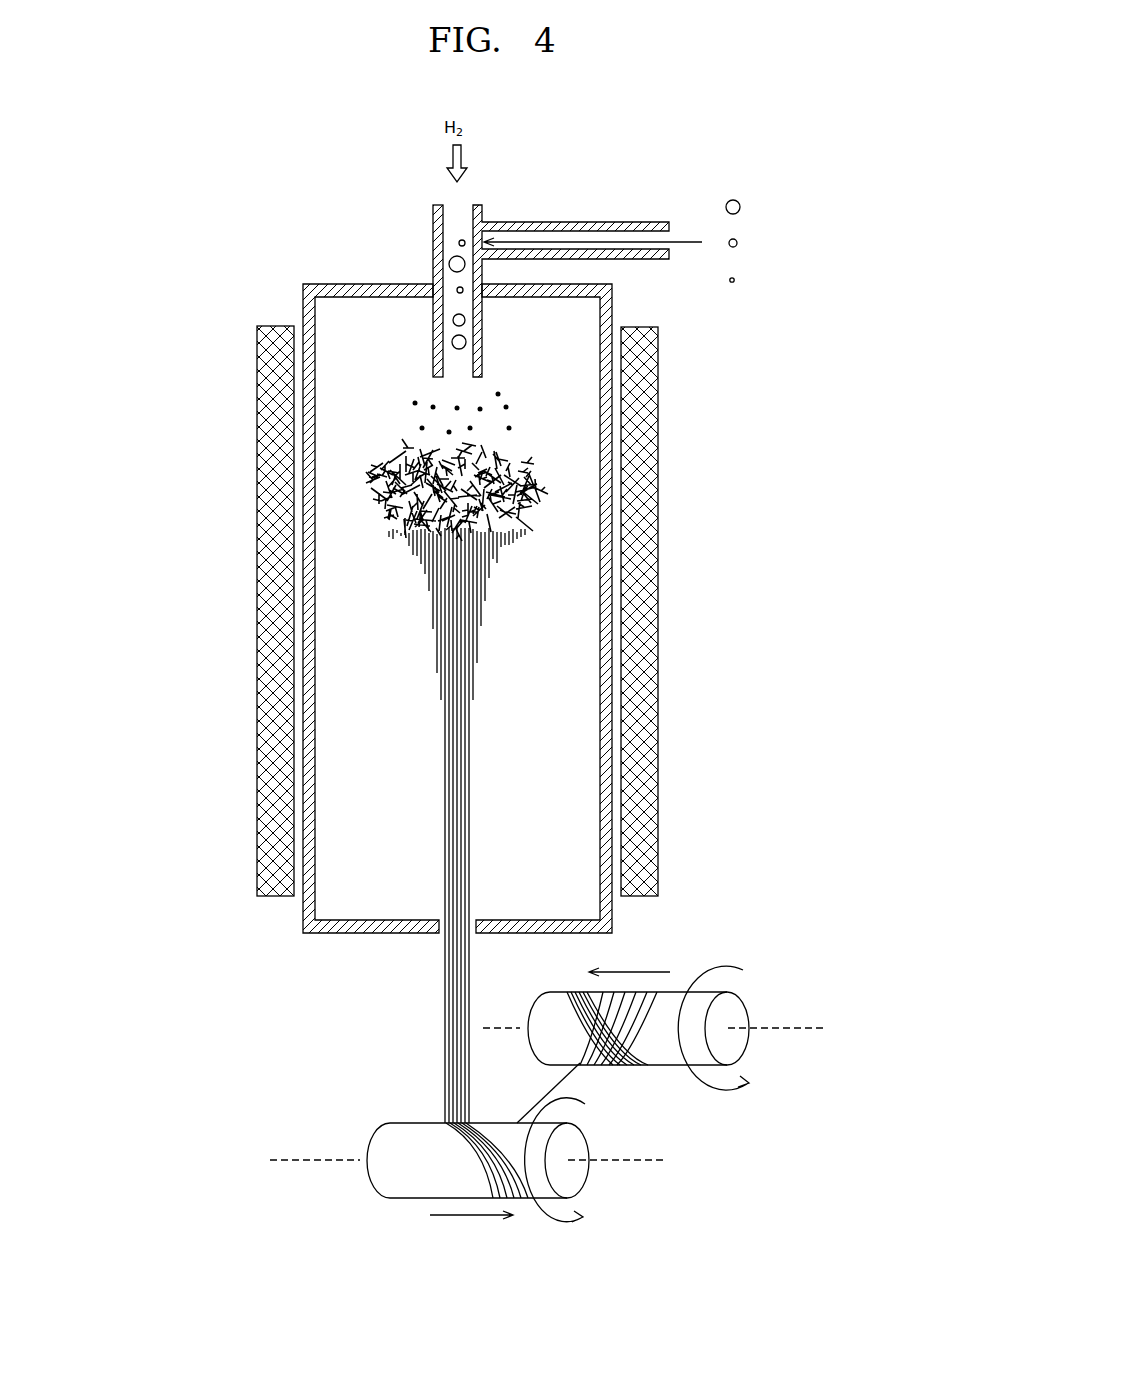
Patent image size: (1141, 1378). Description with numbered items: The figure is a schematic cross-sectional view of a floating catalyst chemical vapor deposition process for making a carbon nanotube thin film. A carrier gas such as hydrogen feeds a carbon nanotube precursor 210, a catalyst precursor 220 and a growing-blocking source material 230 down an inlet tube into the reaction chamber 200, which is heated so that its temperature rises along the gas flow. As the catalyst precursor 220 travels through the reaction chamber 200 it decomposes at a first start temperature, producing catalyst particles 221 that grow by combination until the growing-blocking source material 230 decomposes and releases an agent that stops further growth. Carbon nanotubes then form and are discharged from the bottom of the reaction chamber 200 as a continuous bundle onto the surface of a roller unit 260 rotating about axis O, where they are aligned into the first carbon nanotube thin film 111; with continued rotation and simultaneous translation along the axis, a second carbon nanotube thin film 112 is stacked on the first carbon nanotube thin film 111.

The reaction chamber 200 is at (610, 308).
The carbon nanotube precursor 210 is at (741, 207).
The catalyst precursor 220 is at (738, 243).
The growing-blocking source material 230 is at (735, 280).
The catalyst particles 221 is at (509, 405).
The first carbon nanotube thin film 111 is at (640, 1038).
The second carbon nanotube thin film 112 is at (617, 990).
The roller unit 260 is at (377, 1148).